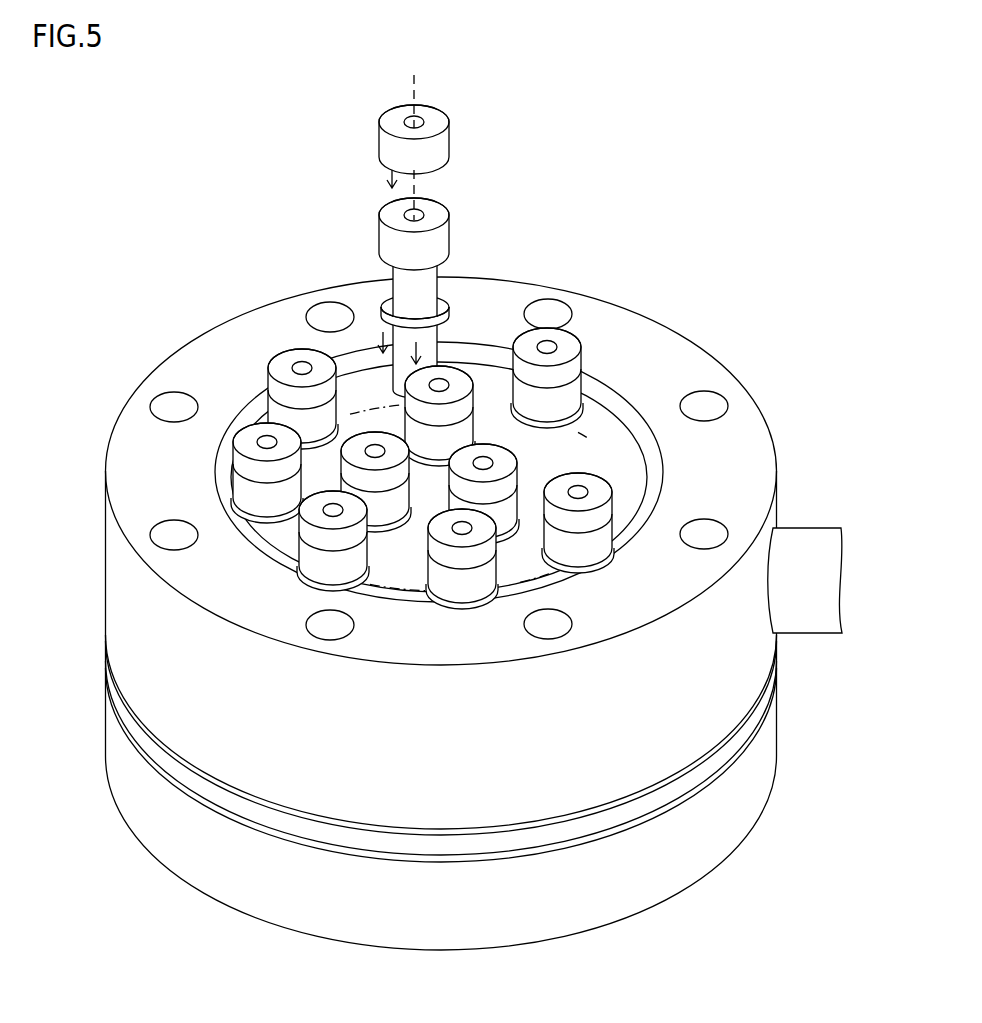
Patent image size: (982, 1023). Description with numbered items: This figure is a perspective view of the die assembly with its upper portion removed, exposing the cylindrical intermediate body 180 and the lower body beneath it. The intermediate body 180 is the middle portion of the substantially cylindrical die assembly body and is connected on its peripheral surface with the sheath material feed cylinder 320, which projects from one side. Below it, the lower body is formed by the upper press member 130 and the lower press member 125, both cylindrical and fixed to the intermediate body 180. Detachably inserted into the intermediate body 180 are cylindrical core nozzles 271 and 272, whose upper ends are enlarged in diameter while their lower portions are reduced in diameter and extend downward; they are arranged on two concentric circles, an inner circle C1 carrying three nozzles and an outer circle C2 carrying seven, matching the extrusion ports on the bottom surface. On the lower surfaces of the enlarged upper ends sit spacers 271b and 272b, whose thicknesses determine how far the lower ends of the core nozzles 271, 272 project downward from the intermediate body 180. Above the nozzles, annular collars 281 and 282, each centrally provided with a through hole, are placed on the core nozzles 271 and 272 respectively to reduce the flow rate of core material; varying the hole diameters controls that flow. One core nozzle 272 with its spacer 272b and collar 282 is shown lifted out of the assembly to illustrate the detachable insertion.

The intermediate body 180 is at (228, 348).
The lower press member 125 is at (750, 775).
The upper press member 130 is at (752, 727).
The sheath material feed cylinder 320 is at (808, 540).
The core nozzle 271 is at (648, 446).
The spacer 271b is at (523, 540).
The collar 281 is at (507, 460).
The core nozzle 272 is at (464, 298).
The spacer 272b is at (443, 302).
The collar 282 is at (437, 146).
The inner circle C1 is at (402, 440).
The outer circle C2 is at (400, 455).